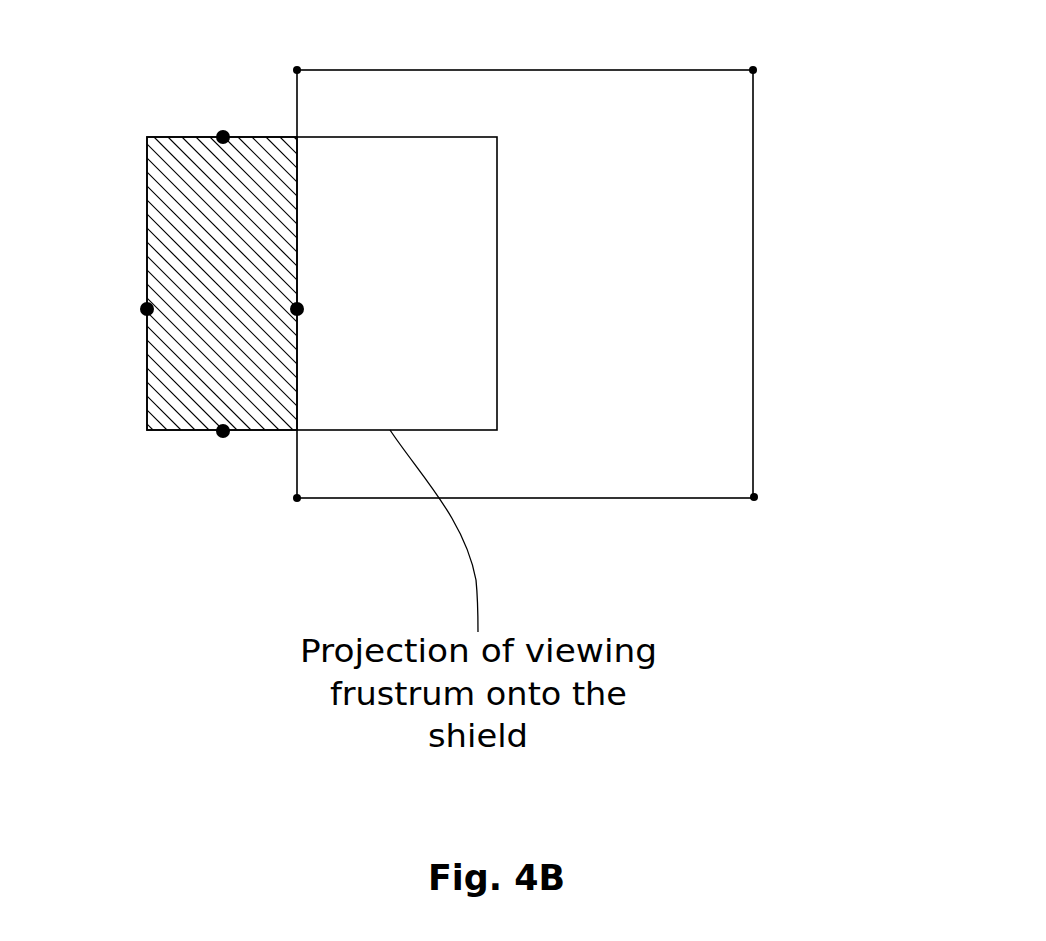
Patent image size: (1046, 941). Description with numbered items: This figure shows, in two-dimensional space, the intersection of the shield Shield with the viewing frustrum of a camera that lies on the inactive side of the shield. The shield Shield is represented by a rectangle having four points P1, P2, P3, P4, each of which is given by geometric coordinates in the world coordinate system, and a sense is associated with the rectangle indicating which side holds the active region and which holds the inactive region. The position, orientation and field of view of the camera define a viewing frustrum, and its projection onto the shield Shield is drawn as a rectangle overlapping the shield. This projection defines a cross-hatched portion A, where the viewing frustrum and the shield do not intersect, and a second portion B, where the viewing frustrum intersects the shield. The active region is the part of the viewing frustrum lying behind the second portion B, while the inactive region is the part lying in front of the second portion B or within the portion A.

The point P1 is at (296, 56).
The point P2 is at (754, 55).
The point P3 is at (298, 518).
The point P4 is at (754, 517).
The cross-hatched portion A is at (163, 245).
The second portion B is at (365, 160).
The shield Shield is at (753, 233).